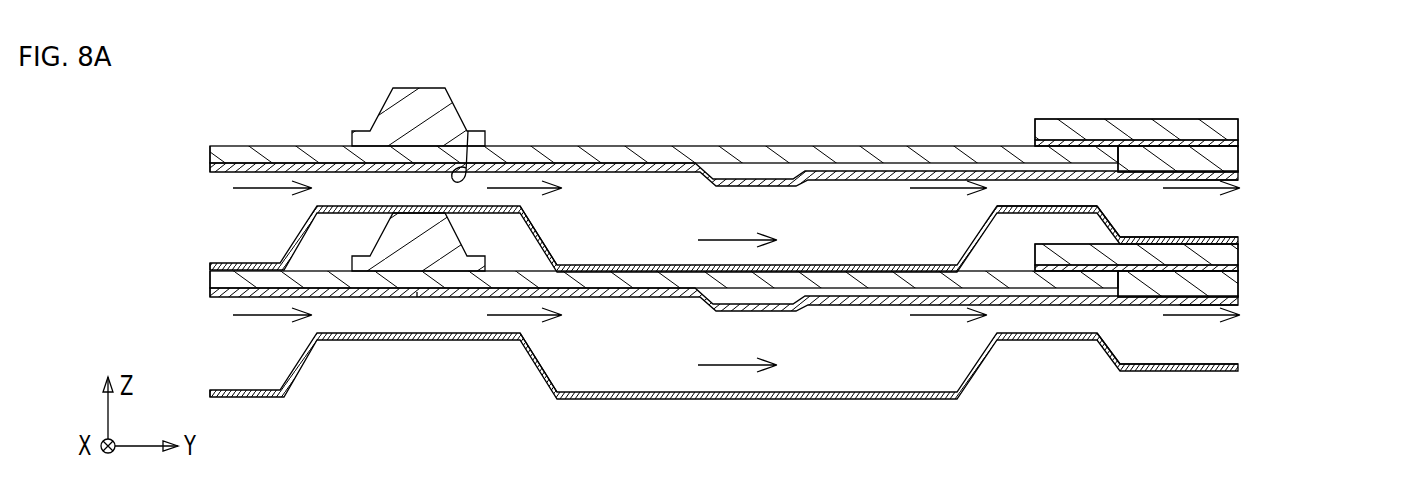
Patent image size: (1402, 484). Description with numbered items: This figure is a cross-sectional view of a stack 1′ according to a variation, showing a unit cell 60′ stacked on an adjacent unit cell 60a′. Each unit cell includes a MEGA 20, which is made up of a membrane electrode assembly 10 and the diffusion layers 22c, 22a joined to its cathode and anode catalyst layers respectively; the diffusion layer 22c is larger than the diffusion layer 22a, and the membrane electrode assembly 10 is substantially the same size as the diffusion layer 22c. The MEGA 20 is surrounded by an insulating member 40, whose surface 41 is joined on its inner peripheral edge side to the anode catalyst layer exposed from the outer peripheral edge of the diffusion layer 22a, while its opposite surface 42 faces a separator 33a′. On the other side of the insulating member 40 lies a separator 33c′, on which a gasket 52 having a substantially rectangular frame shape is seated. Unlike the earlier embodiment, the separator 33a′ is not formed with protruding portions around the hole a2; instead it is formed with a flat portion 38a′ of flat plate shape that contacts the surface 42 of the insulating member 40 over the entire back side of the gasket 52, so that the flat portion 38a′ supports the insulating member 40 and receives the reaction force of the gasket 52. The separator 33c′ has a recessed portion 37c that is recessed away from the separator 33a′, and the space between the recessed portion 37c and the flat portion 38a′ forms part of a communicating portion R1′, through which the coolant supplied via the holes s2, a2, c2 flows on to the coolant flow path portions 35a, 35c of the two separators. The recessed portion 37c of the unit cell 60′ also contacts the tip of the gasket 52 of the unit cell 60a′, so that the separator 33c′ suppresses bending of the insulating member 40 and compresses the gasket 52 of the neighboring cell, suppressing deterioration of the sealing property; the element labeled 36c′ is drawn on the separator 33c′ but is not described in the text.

The stack 1′ is at (1312, 76).
The membrane electrode assembly 10 is at (1232, 143).
The MEGA 20 is at (1297, 107).
The diffusion layer 22a is at (1232, 162).
The diffusion layer 22c is at (1232, 130).
The separator 33a′ is at (1236, 180).
The separator 33c′ is at (1236, 238).
The coolant flow path portion 35a is at (1122, 172).
The coolant flow path portion 35c is at (1164, 238).
The case upper wall 36c′ is at (300, 236).
The recessed portion 37c is at (504, 213).
The flat portion 38a′ is at (468, 131).
The insulating member 40 is at (624, 142).
The surface 41 is at (538, 145).
The surface 42 is at (805, 172).
The gasket 52 is at (392, 98).
The unit cell 60′ is at (1346, 168).
The unit cell 60a′ is at (1345, 303).
The communicating portion R1′ is at (668, 218).
The hole s2 is at (212, 154).
The hole a2 is at (212, 170).
The hole c2 is at (212, 266).